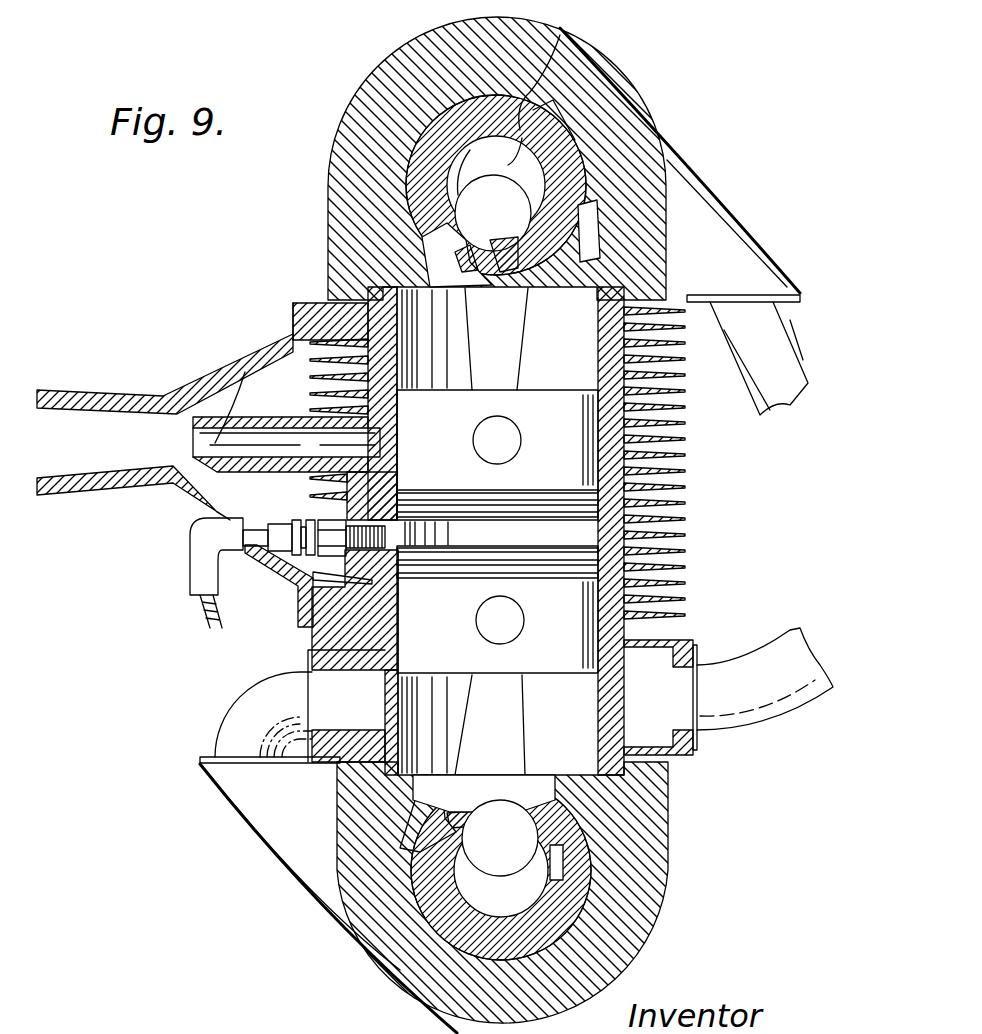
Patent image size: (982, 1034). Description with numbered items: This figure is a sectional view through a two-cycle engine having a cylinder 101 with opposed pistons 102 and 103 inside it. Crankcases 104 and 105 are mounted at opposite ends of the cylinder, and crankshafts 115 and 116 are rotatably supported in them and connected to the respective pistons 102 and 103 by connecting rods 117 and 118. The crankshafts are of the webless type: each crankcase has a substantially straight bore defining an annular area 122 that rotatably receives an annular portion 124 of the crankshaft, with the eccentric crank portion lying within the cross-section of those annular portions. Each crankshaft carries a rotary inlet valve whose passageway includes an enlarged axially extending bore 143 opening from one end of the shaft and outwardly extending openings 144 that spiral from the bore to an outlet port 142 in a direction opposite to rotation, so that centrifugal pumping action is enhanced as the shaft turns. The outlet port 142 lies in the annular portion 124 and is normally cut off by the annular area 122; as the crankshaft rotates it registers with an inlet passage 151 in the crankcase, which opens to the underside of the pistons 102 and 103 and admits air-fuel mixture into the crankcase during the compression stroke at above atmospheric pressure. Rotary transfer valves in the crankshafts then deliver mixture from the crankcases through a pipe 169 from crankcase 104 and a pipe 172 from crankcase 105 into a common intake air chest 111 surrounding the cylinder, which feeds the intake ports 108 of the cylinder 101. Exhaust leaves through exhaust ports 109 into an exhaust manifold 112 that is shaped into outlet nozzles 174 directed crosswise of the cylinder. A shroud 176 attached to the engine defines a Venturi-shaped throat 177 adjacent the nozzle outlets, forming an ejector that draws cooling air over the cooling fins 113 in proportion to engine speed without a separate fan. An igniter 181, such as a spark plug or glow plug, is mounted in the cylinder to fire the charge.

The cylinder 101 is at (397, 474).
The piston 102 is at (555, 478).
The piston 103 is at (462, 608).
The crankcase 104 is at (614, 86).
The crankcase 105 is at (667, 805).
The intake ports 108 is at (398, 637).
The exhaust ports 109 is at (398, 440).
The intake air chest 111 is at (693, 645).
The exhaust manifold 112 is at (350, 437).
The cooling fins 113 is at (688, 488).
The crankshaft 115 is at (577, 157).
The crankshaft 116 is at (577, 897).
The connecting rod 117 is at (516, 364).
The connecting rod 118 is at (517, 737).
The annular area 122 is at (497, 205).
The annular portion 124 is at (560, 35).
The outlet port 142 is at (527, 268).
The bore 143 is at (466, 168).
The outwardly extending openings 144 is at (460, 188).
The inlet passage 151 is at (548, 278).
The pipe 169 is at (760, 372).
The pipe 172 is at (257, 697).
The outlet nozzles 174 is at (245, 372).
The shroud 176 is at (265, 350).
The Venturi-shaped throat 177 is at (170, 397).
The igniter 181 is at (303, 585).